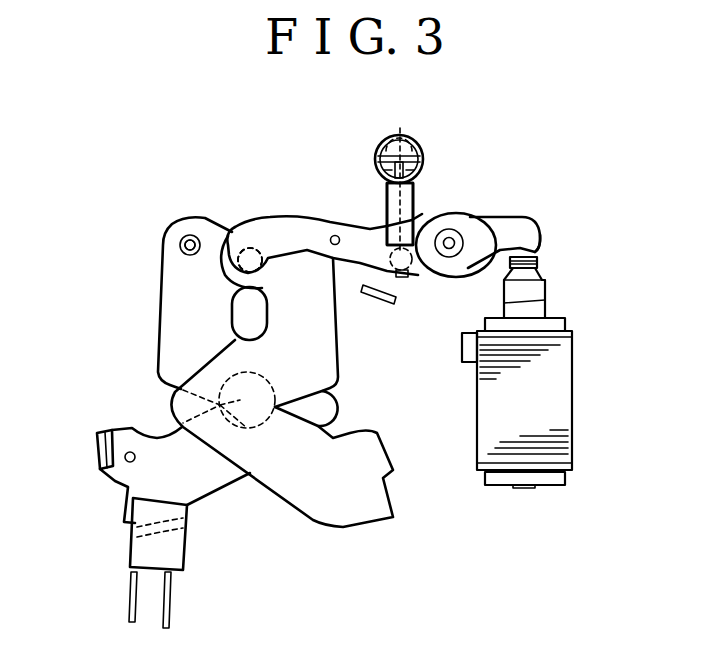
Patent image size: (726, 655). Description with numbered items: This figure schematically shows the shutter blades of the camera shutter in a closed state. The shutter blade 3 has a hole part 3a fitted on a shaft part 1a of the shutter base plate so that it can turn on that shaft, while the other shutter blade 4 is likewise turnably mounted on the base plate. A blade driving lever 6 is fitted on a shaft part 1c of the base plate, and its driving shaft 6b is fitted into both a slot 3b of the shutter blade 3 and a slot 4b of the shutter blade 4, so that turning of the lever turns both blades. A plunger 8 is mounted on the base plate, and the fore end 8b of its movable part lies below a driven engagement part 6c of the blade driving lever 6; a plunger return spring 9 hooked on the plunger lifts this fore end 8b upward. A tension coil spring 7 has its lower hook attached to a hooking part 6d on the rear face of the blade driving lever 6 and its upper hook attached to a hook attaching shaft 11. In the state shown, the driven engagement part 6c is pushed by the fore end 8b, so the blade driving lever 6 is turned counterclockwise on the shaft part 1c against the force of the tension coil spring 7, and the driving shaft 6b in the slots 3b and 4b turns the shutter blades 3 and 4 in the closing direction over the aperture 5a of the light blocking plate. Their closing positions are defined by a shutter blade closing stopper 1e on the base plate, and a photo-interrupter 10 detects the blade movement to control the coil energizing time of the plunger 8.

The shaft part 1a is at (183, 240).
The shaft part 1c is at (449, 242).
The shutter blade closing stopper 1e is at (107, 442).
The shutter blade 3 is at (185, 298).
The hole part 3a is at (191, 236).
The slot 3b is at (254, 250).
The shutter blade 4 is at (357, 505).
The slot 4b is at (259, 202).
The aperture 5a is at (227, 378).
The blade driving lever 6 is at (512, 228).
The driving shaft 6b is at (274, 202).
The driven engagement part 6c is at (541, 252).
The hooking part 6d is at (403, 278).
The tension coil spring 7 is at (388, 218).
The plunger 8 is at (566, 443).
The fore end of the movable part of the plunger 8b is at (540, 258).
The plunger return spring 9 is at (535, 300).
The photo-interrupter 10 is at (143, 551).
The hook attaching shaft 11 is at (413, 141).